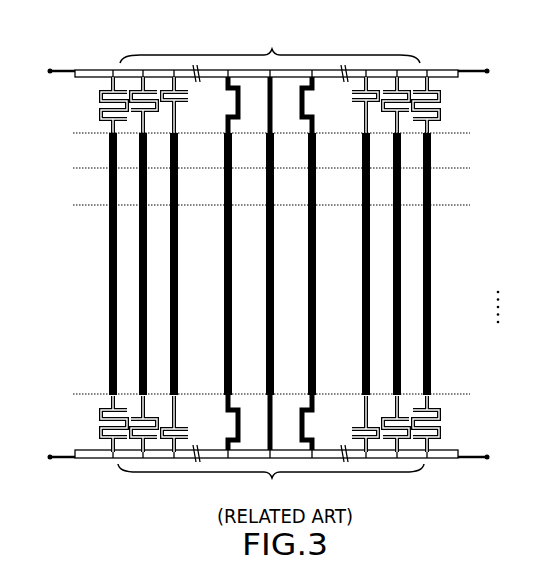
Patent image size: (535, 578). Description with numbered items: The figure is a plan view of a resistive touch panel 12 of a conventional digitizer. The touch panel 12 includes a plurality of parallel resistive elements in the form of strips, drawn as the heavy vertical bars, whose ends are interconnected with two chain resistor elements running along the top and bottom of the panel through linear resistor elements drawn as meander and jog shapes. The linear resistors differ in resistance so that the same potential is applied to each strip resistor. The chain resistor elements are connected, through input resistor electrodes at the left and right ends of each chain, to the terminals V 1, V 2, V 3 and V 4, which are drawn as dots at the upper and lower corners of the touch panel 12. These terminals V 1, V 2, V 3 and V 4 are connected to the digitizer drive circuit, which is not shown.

The touch panel 12 is at (279, 261).
The terminal V1 1 is at (53, 72).
The terminal V2 2 is at (484, 72).
The terminal V3 3 is at (53, 458).
The terminal V4 4 is at (484, 458).